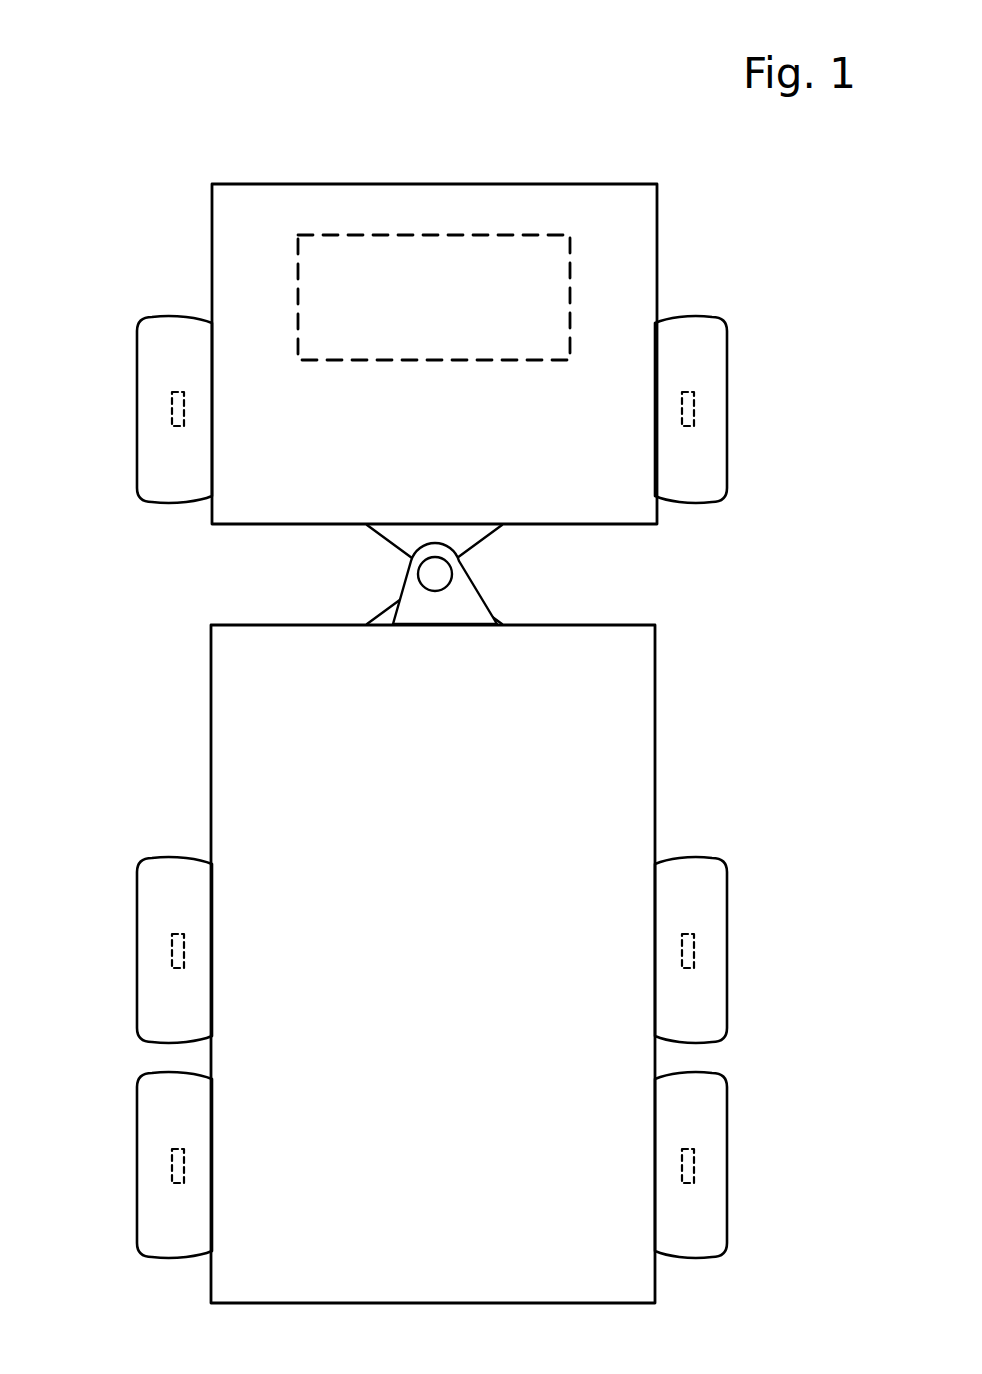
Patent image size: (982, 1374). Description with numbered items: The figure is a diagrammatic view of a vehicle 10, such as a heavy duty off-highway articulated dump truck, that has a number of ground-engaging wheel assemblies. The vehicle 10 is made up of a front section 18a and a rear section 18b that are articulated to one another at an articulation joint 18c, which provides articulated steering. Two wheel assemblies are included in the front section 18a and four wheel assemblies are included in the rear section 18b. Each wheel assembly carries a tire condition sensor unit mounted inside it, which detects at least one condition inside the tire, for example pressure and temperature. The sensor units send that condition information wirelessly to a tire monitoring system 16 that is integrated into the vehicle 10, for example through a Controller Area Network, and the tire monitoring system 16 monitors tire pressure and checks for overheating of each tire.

The vehicle 10 is at (170, 113).
The tire monitoring system 16 is at (455, 360).
The front section 18a is at (657, 213).
The rear section 18b is at (655, 683).
The articulation joint 18c is at (492, 600).